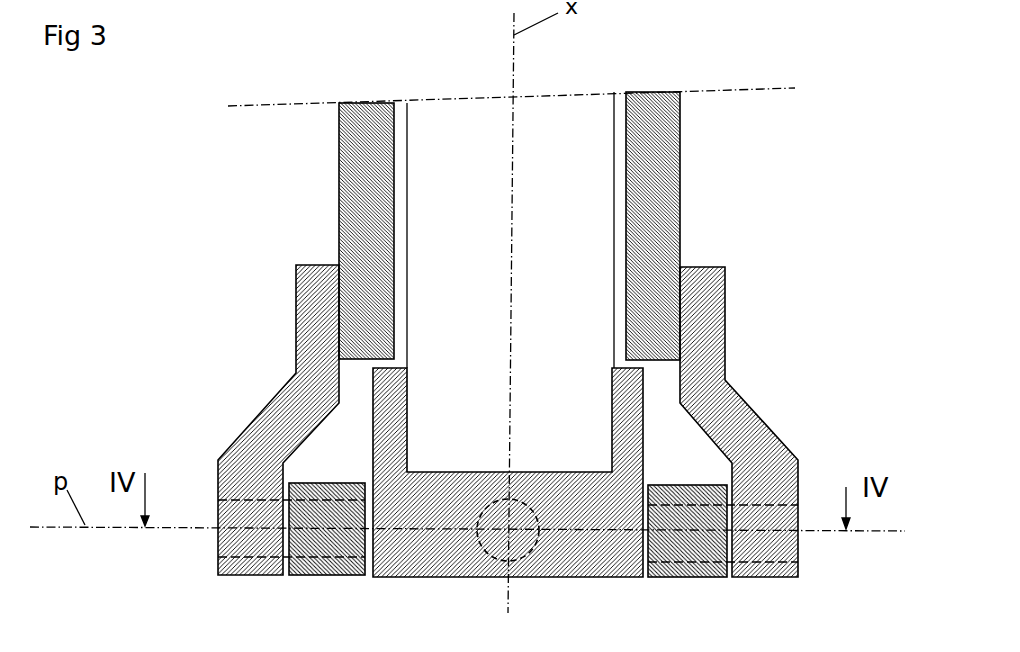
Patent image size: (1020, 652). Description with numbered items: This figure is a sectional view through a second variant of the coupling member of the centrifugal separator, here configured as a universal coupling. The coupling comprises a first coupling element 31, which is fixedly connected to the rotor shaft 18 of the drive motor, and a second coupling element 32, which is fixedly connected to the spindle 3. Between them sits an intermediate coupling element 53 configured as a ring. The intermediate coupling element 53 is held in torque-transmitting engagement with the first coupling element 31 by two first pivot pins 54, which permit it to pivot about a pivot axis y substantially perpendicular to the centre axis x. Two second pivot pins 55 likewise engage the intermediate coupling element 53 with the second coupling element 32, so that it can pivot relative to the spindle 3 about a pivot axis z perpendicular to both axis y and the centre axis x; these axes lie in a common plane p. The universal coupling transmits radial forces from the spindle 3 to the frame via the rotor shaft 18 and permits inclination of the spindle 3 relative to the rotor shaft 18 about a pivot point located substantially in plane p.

The spindle 3 is at (587, 148).
The rotor shaft 18 is at (650, 208).
The first coupling element 31 is at (727, 378).
The second coupling element 32 is at (428, 550).
The intermediate coupling element 53 is at (326, 573).
The first pivot pins 54 is at (268, 558).
The second pivot pins 55 is at (522, 555).